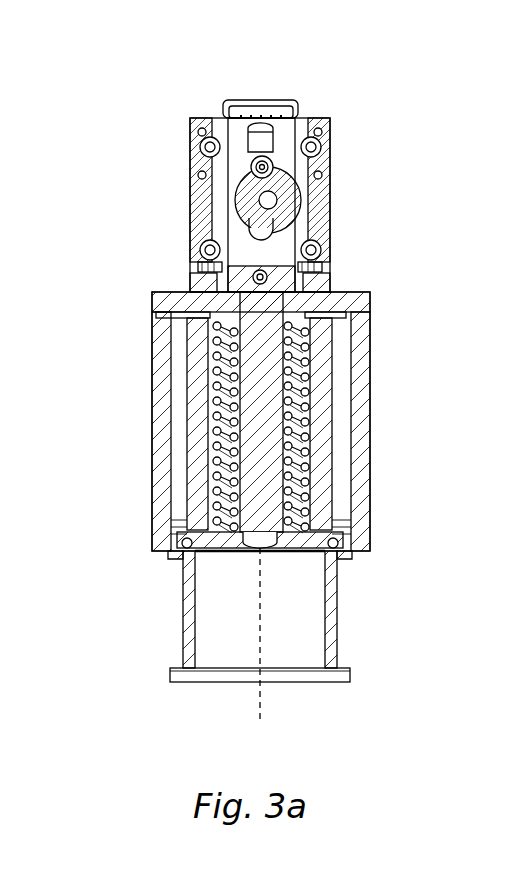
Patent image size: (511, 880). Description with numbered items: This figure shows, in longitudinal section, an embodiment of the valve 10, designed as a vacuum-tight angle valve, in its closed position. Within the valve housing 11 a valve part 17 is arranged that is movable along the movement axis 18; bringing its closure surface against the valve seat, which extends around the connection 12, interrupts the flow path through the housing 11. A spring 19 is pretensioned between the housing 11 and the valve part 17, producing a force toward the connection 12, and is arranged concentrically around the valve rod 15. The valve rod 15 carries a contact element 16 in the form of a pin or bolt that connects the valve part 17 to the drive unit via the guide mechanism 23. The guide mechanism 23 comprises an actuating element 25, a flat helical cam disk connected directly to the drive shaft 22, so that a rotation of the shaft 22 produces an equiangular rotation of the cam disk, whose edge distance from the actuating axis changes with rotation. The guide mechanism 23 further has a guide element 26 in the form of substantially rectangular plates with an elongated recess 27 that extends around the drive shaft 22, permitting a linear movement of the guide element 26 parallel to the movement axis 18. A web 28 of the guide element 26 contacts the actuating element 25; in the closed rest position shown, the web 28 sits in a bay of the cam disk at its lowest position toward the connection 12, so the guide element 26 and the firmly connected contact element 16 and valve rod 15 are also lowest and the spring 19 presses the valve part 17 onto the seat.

The valve 10 is at (399, 59).
The valve housing 11 is at (358, 448).
The connection 12 is at (298, 665).
The valve rod 15 is at (267, 303).
The contact element 16 is at (258, 277).
The valve part 17 is at (181, 455).
The movement axis 18 is at (258, 705).
The spring 19 is at (292, 387).
The drive shaft 22 is at (270, 196).
The guide mechanism 23 is at (168, 178).
The actuating element 25 is at (290, 202).
The guide element 26 is at (278, 243).
The recess 27 is at (257, 236).
The web 28 is at (258, 163).